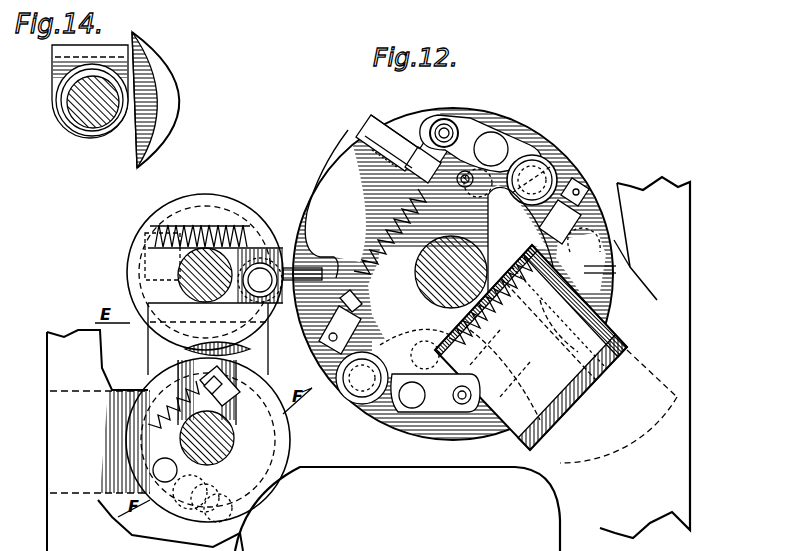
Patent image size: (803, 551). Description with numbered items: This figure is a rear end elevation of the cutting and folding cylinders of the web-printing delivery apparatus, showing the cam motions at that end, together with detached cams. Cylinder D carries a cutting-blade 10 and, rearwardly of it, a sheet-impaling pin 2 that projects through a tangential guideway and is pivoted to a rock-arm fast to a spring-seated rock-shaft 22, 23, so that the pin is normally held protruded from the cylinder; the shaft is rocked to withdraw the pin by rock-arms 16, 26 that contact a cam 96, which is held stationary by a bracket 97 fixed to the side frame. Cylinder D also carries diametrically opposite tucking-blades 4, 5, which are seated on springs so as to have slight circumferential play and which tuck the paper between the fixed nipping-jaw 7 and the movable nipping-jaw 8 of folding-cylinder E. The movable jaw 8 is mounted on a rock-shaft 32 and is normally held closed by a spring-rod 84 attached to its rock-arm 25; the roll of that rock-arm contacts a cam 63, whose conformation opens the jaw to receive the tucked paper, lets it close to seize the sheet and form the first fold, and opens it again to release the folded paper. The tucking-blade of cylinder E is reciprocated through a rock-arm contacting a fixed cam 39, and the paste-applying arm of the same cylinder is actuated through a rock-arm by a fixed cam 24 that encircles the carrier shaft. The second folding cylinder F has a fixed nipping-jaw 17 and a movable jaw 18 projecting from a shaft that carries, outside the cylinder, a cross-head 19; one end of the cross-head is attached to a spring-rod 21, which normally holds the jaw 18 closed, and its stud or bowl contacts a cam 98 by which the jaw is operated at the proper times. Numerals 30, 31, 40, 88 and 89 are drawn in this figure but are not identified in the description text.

In FIG. 12, the sheet-impaling pin 2 is at (373, 127).
In FIG. 12, the tucking-blade 4 is at (326, 204).
In FIG. 12, the tucking-blade 5 is at (607, 273).
In FIG. 12, the fixed nipping-jaw 7 is at (280, 292).
In FIG. 12, the movable nipping-jaw 8 is at (287, 272).
In FIG. 12, the cutting-blade 10 is at (366, 132).
In FIG. 12, the rock-arm 16 is at (547, 170).
In FIG. 12, the fixed nipping-jaw 17 is at (204, 515).
In FIG. 12, the movable jaw 18 is at (163, 506).
In FIG. 12, the cross-head 19 is at (165, 470).
In FIG. 12, the spring-rod 21 is at (194, 397).
In FIG. 12, the rock-shaft 22 is at (480, 156).
In FIG. 12, the rock-shaft 23 is at (430, 370).
In FIG. 14, the fixed cam 24 is at (99, 134).
In FIG. 12, the rock-arm 25 is at (268, 250).
In FIG. 12, the rock-arm 26 is at (358, 398).
In FIG. 12, the shaft 30 is at (205, 275).
In FIG. 12, the shaft 31 is at (207, 438).
In FIG. 12, the rock-shaft 32 is at (260, 280).
In FIG. 14, the fixed cam 39 is at (163, 78).
In FIG. 12, the central shaft 40 is at (451, 272).
In FIG. 12, the cam 63 is at (148, 277).
In FIG. 12, the spring-rod 84 is at (220, 228).
In FIG. 12, the cam 88 is at (203, 491).
In FIG. 12, the housing section F 89 is at (268, 487).
In FIG. 12, the cam 96 is at (524, 243).
In FIG. 12, the bracket 97 is at (538, 355).
In FIG. 12, the cam 98 is at (208, 440).